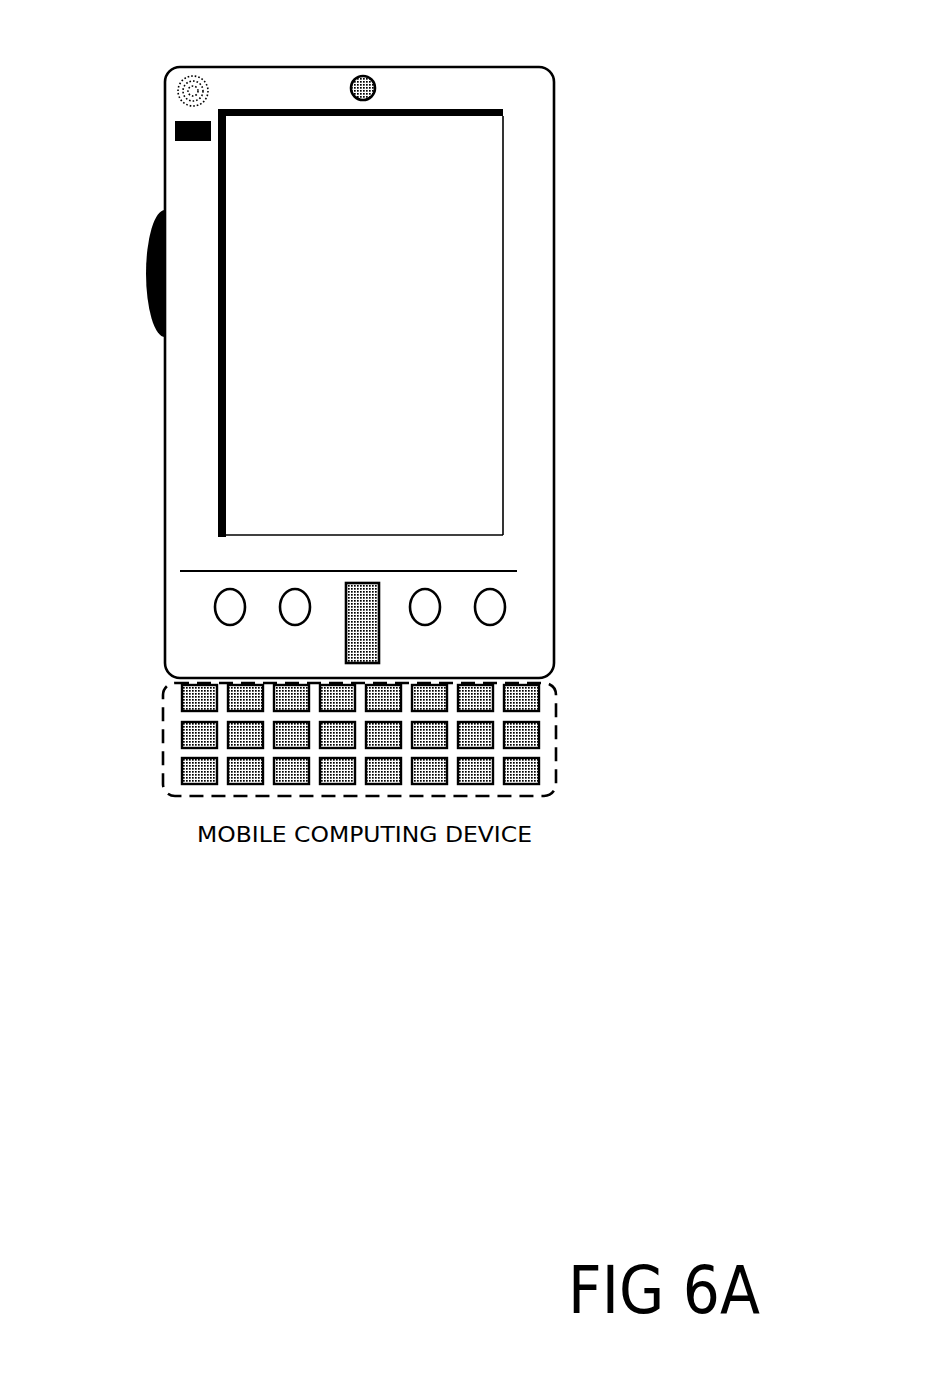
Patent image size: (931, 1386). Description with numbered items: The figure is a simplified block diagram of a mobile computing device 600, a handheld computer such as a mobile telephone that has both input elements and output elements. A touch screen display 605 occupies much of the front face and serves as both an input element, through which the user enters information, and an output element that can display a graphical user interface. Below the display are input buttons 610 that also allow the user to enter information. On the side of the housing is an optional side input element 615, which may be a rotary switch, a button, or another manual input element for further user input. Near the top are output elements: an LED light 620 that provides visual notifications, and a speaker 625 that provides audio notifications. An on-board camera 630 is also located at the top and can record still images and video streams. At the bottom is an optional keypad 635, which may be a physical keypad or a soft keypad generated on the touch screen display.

The mobile computing device 600 is at (554, 97).
The touch screen display 605 is at (257, 392).
The input buttons 610 is at (346, 633).
The side input element 615 is at (150, 248).
The LED light 620 is at (175, 131).
The speaker 625 is at (178, 87).
The on-board camera 630 is at (363, 76).
The keypad 635 is at (172, 717).